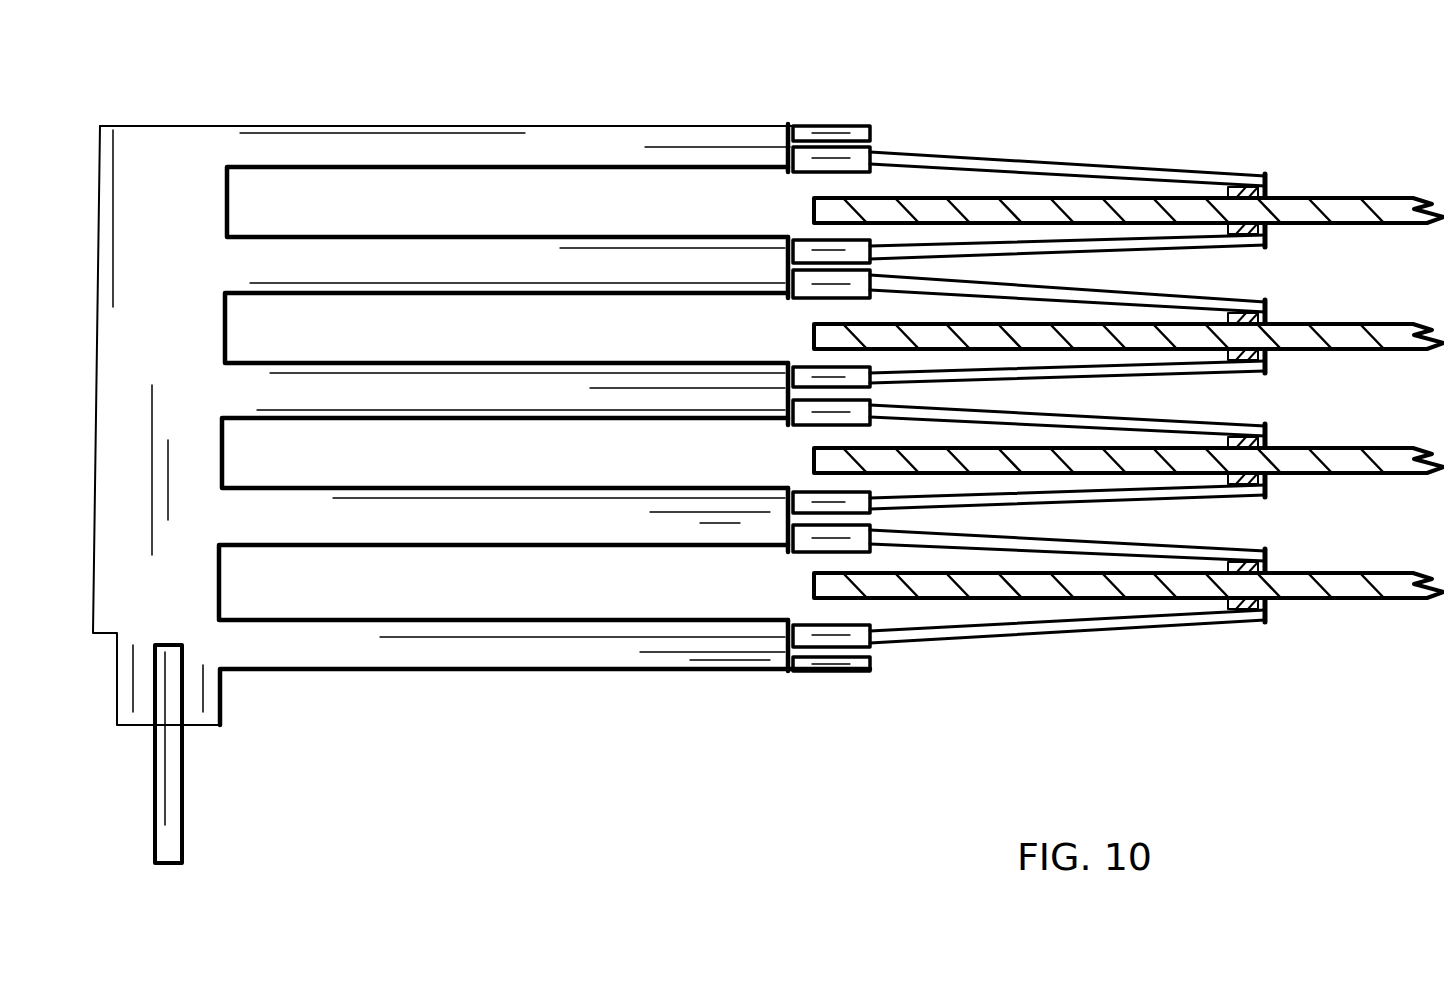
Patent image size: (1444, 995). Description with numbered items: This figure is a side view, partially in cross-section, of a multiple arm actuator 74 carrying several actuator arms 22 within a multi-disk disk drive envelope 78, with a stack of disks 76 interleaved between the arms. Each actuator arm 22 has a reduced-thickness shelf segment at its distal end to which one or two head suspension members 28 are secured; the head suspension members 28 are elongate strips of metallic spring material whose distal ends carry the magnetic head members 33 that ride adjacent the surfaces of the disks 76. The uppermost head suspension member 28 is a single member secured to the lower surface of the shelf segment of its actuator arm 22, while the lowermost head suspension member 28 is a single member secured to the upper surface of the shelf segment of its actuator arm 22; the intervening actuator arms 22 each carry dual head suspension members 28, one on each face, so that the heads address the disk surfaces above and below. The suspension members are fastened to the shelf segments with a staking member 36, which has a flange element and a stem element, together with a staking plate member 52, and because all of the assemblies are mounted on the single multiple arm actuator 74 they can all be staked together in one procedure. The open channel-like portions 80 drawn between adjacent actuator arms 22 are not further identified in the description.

The actuator arm 22 is at (656, 118).
The head suspension member 28 is at (1061, 152).
The magnetic head member 33 is at (1264, 189).
The staking member 36 is at (829, 118).
The staking plate member 52 is at (826, 684).
The multiple arm actuator 74 is at (228, 725).
The disk 76 is at (803, 208).
The disk drive envelope 78 is at (522, 758).
The box channel 80 is at (230, 203).